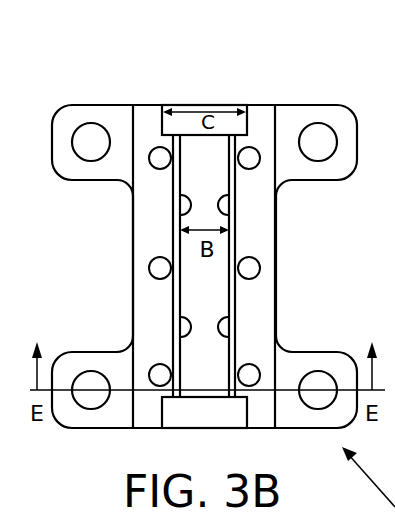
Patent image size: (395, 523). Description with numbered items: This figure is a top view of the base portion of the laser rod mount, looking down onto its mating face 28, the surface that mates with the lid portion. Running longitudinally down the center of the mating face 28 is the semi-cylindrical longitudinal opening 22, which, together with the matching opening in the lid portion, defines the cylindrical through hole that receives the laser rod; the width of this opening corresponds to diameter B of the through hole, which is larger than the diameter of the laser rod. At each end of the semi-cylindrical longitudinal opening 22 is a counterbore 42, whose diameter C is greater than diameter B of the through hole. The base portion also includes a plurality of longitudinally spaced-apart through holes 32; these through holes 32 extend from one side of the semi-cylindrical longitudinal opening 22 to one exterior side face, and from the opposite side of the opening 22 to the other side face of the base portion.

The semi-cylindrical longitudinal opening 22 is at (212, 290).
The mating face 28 is at (152, 222).
The through holes 32 is at (255, 266).
The counterbores 42 is at (200, 104).